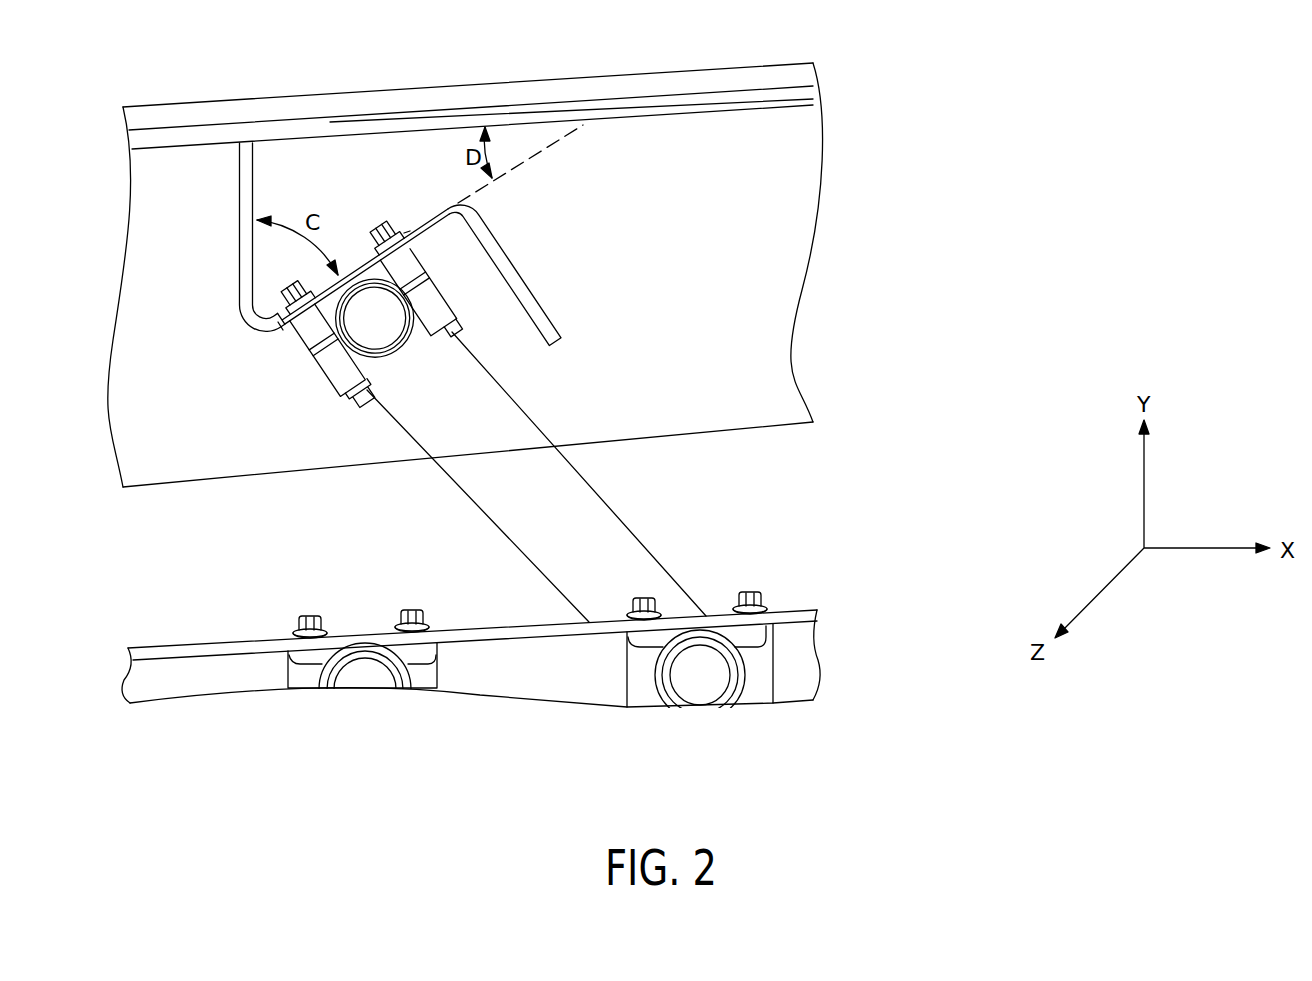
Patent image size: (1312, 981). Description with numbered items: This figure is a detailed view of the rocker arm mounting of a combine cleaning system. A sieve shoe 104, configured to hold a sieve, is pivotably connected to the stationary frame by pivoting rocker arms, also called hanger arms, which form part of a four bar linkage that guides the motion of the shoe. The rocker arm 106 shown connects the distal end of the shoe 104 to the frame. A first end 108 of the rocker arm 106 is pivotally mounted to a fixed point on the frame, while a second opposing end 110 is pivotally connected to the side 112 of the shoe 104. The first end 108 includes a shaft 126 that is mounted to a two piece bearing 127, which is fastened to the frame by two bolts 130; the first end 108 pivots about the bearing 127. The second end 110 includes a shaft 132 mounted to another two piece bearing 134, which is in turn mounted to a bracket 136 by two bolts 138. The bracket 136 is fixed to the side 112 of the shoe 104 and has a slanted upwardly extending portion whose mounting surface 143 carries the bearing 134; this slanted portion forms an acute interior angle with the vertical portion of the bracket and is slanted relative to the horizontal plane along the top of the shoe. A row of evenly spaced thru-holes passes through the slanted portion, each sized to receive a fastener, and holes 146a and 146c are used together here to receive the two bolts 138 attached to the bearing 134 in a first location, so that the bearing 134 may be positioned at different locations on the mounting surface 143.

The sieve shoe 104 is at (728, 197).
The rocker arm 106 is at (602, 530).
The first end of the rocker arm 108 is at (691, 709).
The second end of the rocker arm 110 is at (375, 318).
The side of the shoe 112 is at (785, 302).
The shaft 126 is at (708, 677).
The two piece bearing 127 is at (777, 667).
The bolts 130 is at (748, 597).
The shaft 132 is at (375, 318).
The two piece bearing 134 is at (379, 328).
The bracket 136 is at (247, 210).
The bolts 138 is at (296, 296).
The mounting surface 143 is at (504, 274).
The thru-hole 146a is at (282, 326).
The thru-hole 146c is at (407, 232).